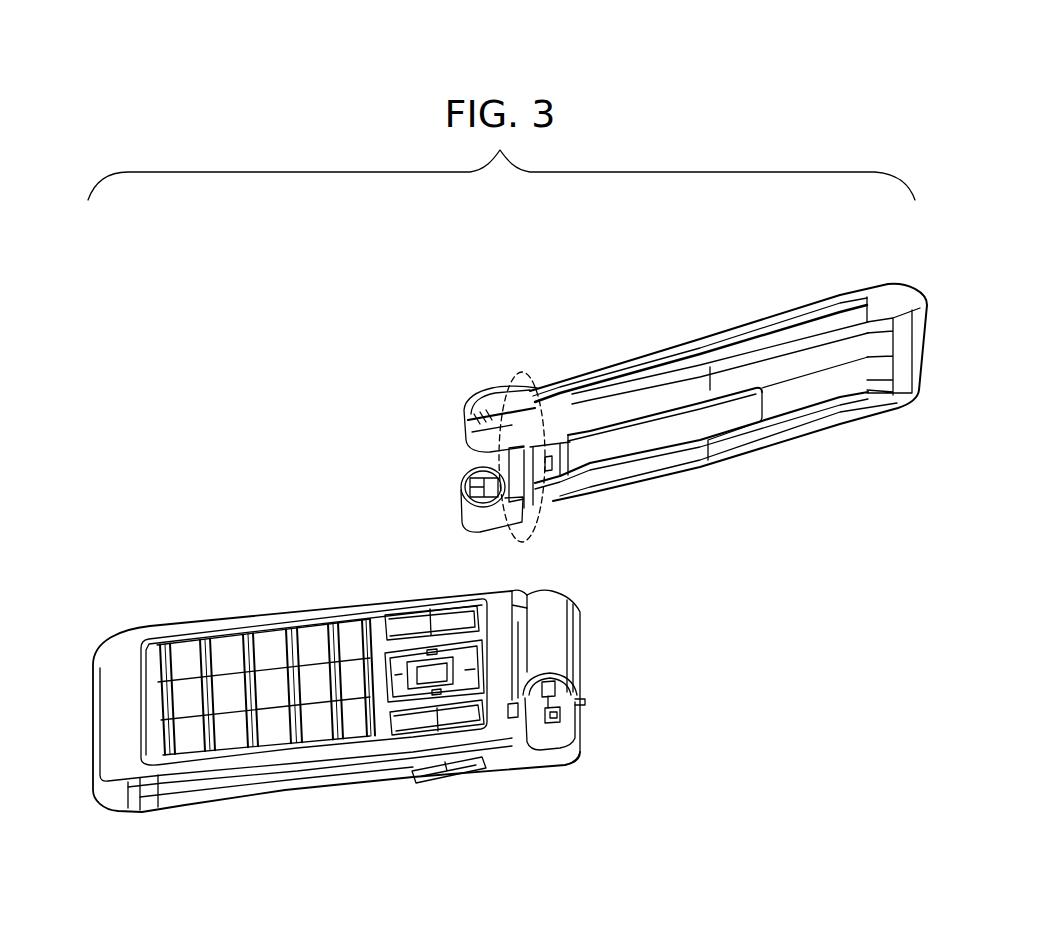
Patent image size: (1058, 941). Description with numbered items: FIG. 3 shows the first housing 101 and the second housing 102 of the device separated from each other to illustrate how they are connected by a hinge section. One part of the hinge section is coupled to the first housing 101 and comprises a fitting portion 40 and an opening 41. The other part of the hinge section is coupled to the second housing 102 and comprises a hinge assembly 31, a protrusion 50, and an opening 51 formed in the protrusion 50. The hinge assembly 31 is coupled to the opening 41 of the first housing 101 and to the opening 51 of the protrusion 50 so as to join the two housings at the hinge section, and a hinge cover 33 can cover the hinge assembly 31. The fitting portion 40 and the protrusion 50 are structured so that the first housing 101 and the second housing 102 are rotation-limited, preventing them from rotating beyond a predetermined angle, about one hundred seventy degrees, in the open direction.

The first housing 101 is at (758, 437).
The second housing 102 is at (310, 778).
The fitting portion 40 is at (529, 372).
The opening 41 is at (461, 490).
The hinge cover 33 is at (551, 470).
The protrusion 50 is at (557, 650).
The opening of the protrusion 51 is at (585, 701).
The hinge assembly 31 is at (567, 737).